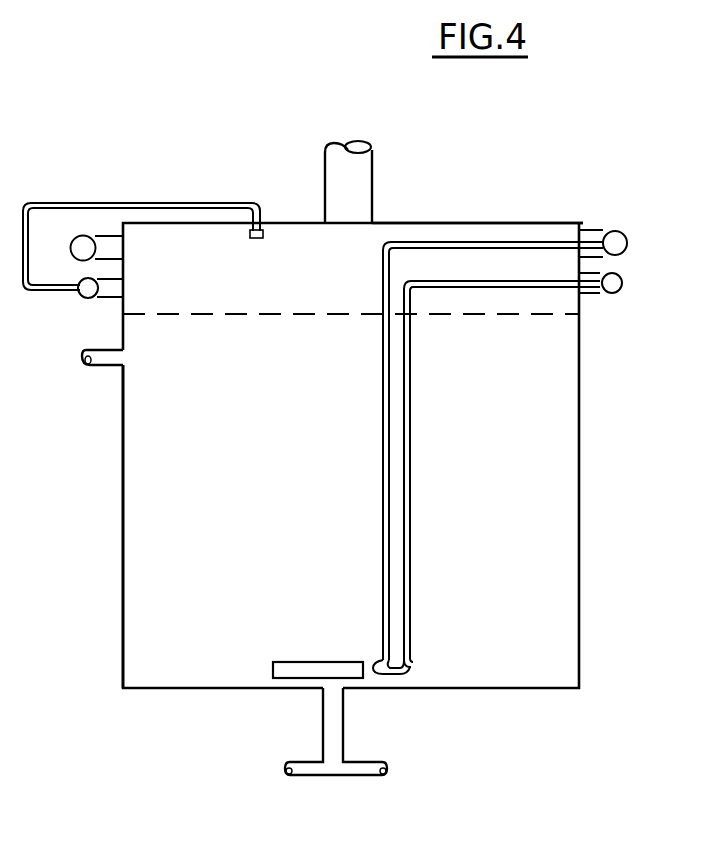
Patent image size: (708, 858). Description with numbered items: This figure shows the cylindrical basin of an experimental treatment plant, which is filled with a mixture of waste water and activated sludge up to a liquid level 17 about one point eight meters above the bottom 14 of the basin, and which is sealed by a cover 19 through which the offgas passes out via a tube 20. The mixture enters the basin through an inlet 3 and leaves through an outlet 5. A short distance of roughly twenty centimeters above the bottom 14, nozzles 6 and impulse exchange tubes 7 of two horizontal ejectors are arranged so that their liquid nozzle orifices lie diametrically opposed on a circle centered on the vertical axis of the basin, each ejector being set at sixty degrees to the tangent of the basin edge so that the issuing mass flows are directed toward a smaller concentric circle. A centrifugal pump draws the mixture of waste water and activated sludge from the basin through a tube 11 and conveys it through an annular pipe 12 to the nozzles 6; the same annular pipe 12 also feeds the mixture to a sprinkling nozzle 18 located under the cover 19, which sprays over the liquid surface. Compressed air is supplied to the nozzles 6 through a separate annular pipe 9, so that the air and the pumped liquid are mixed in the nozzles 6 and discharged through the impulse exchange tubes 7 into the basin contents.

The inlet 3 is at (106, 356).
The outlet 5 is at (288, 783).
The nozzles 6 is at (392, 673).
The impulse exchange tube 7 is at (298, 668).
The annular pipe 9 is at (615, 241).
The tube 11 is at (388, 783).
The annular pipe 12 is at (614, 291).
The bottom 14 is at (513, 689).
The liquid level 17 is at (214, 317).
The sprinkling nozzle 18 is at (263, 238).
The cover 19 is at (482, 221).
The tube 20 is at (362, 167).